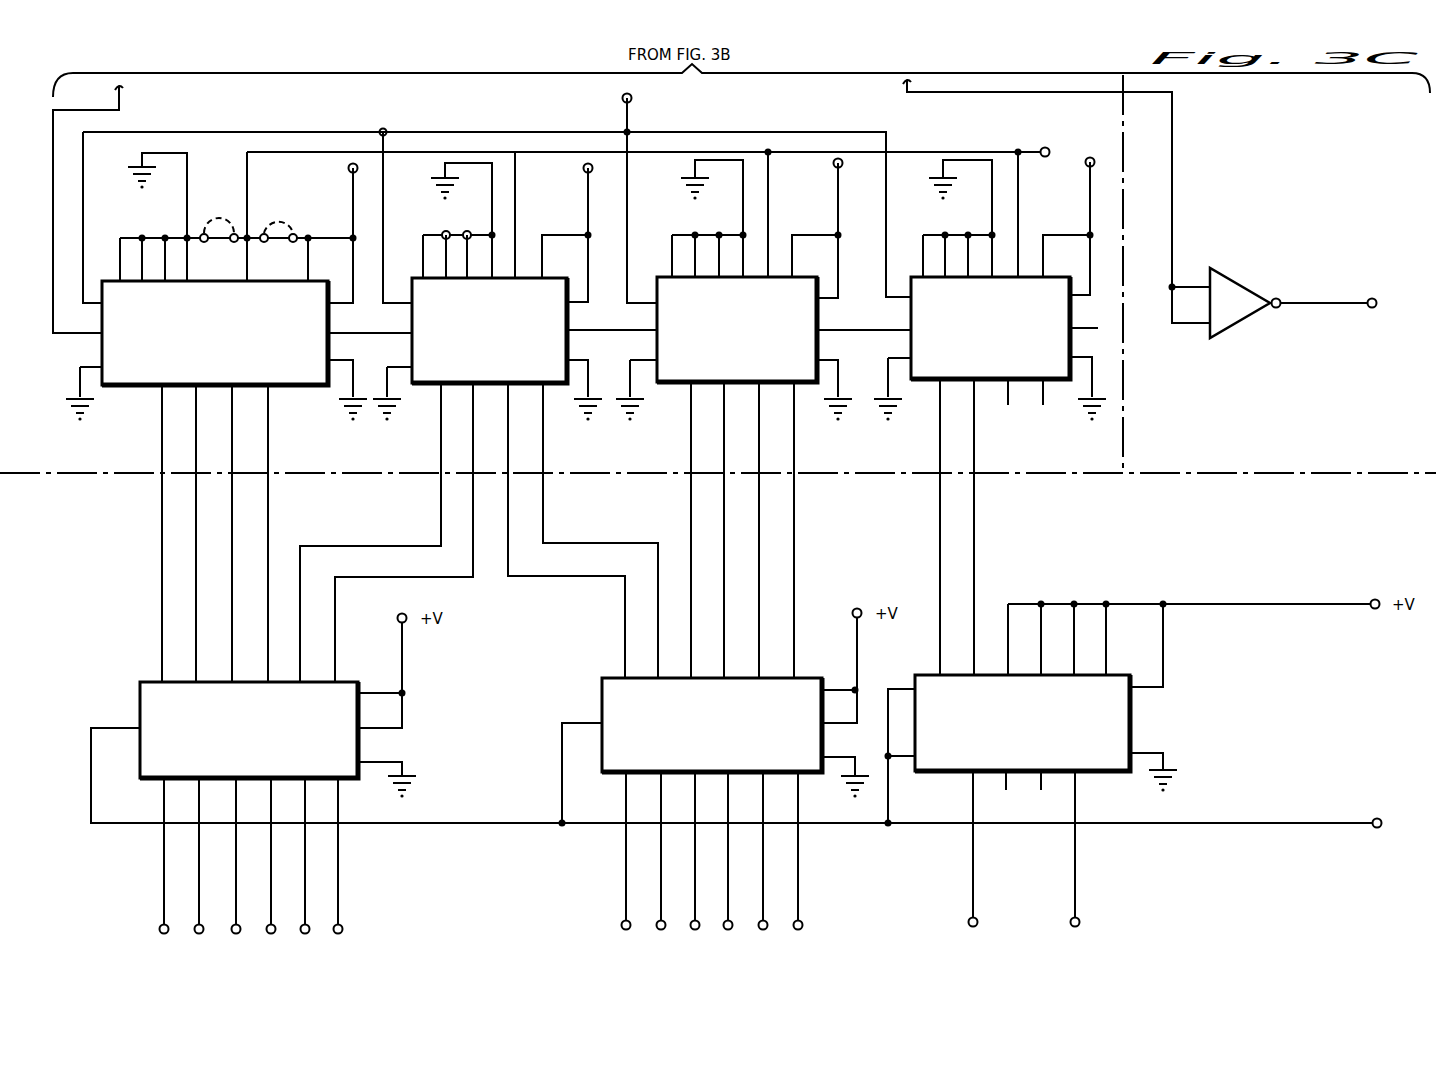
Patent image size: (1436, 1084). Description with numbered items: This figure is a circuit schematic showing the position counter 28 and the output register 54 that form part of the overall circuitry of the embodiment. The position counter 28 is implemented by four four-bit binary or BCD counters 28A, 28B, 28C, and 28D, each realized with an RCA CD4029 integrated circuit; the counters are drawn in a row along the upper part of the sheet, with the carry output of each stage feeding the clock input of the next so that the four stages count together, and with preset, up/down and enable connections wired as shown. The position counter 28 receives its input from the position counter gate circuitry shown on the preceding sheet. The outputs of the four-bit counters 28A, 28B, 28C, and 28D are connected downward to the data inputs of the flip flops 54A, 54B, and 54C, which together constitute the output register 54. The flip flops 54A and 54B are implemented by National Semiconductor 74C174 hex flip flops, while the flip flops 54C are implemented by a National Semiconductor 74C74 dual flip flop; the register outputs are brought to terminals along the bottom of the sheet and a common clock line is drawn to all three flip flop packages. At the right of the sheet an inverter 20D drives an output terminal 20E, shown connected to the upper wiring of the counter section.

The position counter 28 is at (122, 466).
The output register 54 is at (125, 503).
The four bit counter 28A is at (125, 386).
The four bit counter 28B is at (430, 384).
The four bit counter 28C is at (672, 383).
The four bit counter 28D is at (926, 380).
The flip flop 54A is at (140, 698).
The flip flop 54B is at (604, 694).
The flip flops 54C is at (915, 686).
The inverter 20D is at (1236, 287).
The output terminal 20E is at (1374, 298).